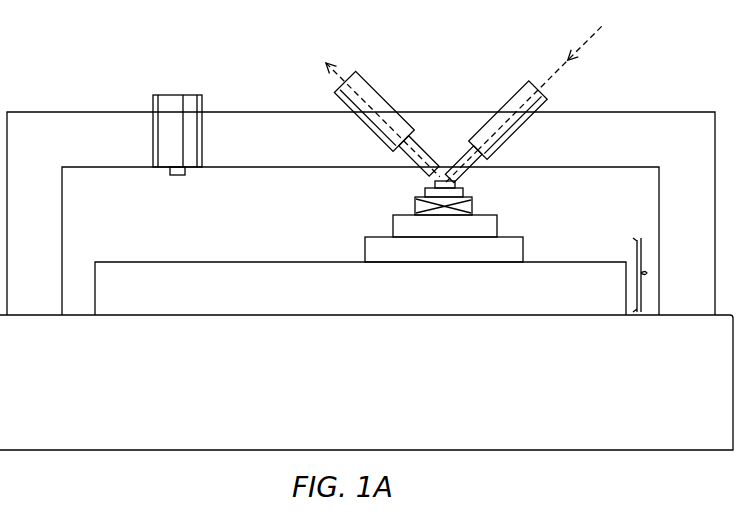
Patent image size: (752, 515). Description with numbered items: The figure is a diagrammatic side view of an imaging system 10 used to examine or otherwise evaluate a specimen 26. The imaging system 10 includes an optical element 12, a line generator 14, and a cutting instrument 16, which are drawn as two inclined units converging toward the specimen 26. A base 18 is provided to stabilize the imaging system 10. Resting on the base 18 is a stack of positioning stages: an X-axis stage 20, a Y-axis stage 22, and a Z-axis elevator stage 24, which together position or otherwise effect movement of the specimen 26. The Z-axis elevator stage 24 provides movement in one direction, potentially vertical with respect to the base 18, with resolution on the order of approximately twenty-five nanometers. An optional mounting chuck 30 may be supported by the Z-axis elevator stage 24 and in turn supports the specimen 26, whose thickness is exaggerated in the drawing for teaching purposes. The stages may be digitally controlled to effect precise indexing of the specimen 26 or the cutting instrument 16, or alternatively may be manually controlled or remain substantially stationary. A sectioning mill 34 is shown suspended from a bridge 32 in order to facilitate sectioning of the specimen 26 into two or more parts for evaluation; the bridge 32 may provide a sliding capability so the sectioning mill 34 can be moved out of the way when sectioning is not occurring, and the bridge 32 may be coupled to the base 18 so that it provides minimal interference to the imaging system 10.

The imaging system 10 is at (112, 74).
The optical element 12 is at (383, 96).
The line generator 14 is at (505, 105).
The cutting instrument 16 is at (458, 161).
The base 18 is at (540, 452).
The X-axis stage 20 is at (647, 273).
The Y-axis stage 22 is at (392, 220).
The Z-axis elevator stage 24 is at (473, 207).
The specimen 26 is at (434, 184).
The mounting chuck 30 is at (464, 192).
The bridge 32 is at (60, 111).
The sectioning mill 34 is at (188, 95).